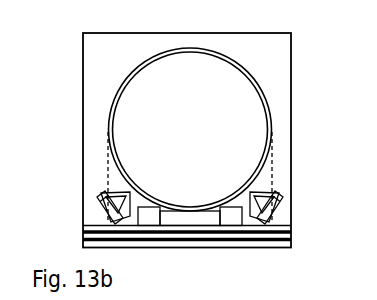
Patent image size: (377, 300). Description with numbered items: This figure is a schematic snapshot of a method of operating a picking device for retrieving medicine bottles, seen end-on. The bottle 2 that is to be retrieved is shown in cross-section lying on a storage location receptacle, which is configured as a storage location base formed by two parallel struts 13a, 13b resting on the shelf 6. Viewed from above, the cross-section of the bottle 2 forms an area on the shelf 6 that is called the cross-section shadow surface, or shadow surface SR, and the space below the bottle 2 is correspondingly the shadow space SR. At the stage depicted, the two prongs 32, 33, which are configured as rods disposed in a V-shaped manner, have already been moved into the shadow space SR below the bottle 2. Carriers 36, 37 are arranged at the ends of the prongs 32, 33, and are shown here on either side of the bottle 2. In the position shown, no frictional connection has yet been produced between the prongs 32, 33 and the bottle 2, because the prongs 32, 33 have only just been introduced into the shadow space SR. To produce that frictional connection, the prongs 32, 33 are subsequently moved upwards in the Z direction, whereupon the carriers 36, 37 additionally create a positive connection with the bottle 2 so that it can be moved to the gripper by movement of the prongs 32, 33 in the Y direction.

The bottle 2 is at (187, 122).
The shadow surface SR is at (107, 188).
The carrier 37 is at (102, 192).
The prong 33 is at (98, 217).
The carrier 36 is at (269, 193).
The prong 32 is at (276, 215).
The strut 13b is at (148, 216).
The strut 13a is at (232, 217).
The shelf 6 is at (191, 233).